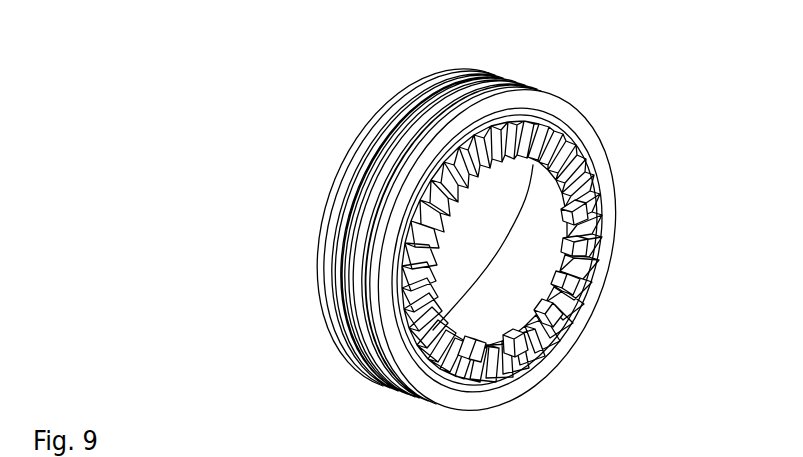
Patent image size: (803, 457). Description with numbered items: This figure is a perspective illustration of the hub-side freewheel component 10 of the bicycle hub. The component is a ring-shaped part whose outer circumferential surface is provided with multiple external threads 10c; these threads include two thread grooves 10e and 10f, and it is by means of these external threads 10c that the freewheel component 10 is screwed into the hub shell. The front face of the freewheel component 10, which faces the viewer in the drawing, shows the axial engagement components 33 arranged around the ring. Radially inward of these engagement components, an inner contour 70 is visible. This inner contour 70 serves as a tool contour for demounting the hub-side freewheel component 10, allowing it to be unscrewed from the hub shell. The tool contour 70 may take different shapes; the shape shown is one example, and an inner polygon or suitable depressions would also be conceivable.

The hub-side freewheel component 10 is at (479, 228).
The external threads 10c is at (545, 78).
The thread groove 10e is at (425, 97).
The thread groove 10f is at (437, 92).
The axial engagement components 33 is at (540, 332).
The inner contour 70 is at (532, 305).